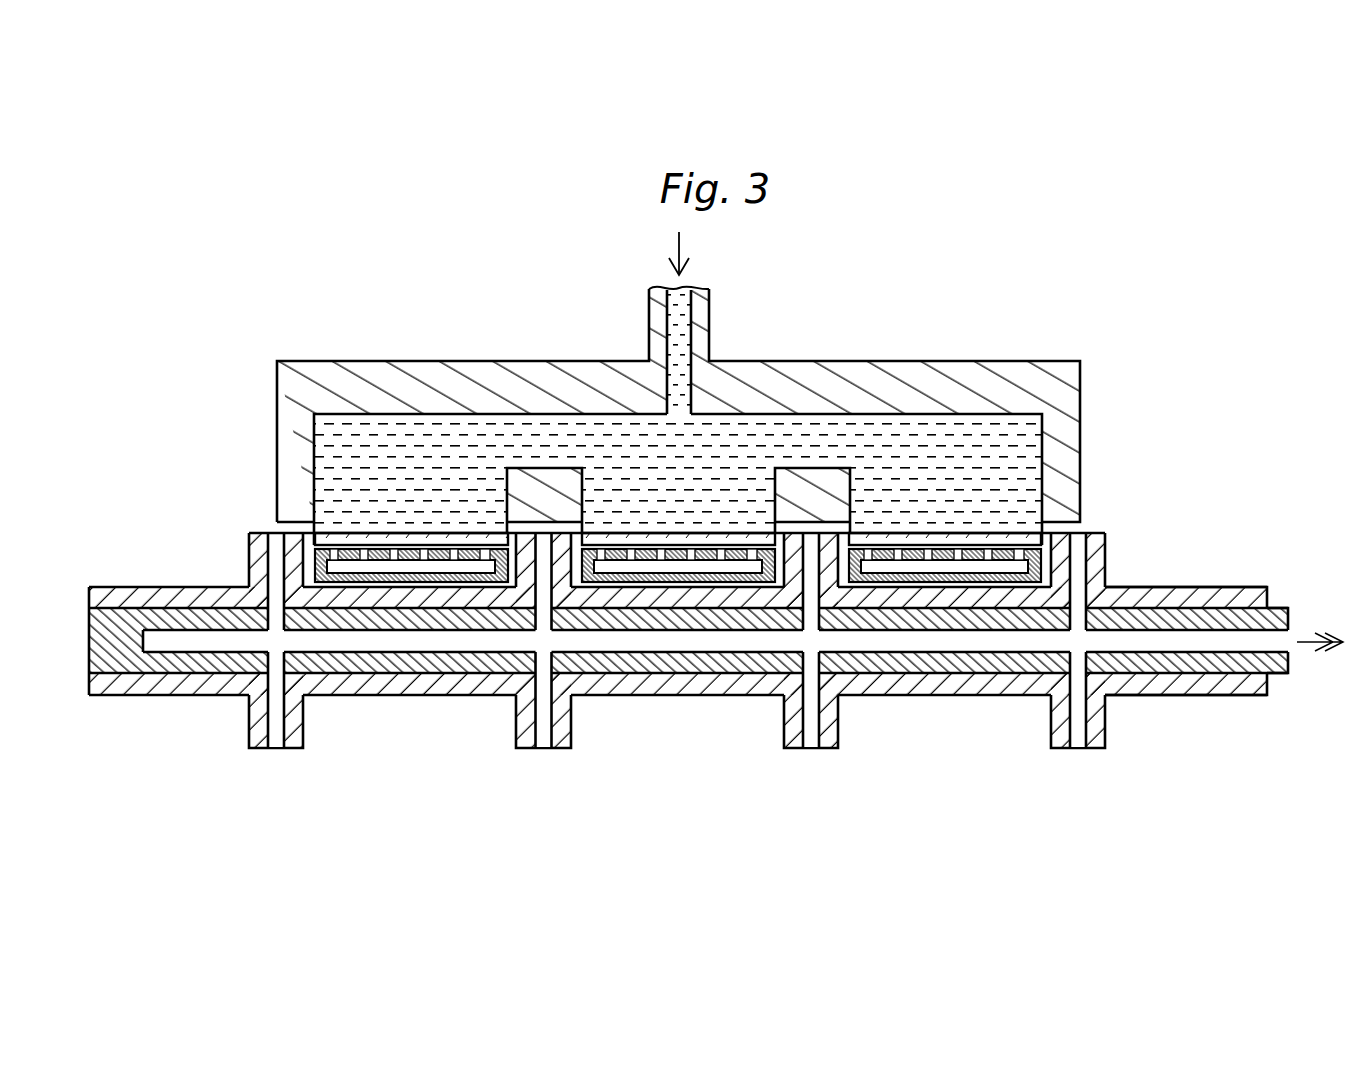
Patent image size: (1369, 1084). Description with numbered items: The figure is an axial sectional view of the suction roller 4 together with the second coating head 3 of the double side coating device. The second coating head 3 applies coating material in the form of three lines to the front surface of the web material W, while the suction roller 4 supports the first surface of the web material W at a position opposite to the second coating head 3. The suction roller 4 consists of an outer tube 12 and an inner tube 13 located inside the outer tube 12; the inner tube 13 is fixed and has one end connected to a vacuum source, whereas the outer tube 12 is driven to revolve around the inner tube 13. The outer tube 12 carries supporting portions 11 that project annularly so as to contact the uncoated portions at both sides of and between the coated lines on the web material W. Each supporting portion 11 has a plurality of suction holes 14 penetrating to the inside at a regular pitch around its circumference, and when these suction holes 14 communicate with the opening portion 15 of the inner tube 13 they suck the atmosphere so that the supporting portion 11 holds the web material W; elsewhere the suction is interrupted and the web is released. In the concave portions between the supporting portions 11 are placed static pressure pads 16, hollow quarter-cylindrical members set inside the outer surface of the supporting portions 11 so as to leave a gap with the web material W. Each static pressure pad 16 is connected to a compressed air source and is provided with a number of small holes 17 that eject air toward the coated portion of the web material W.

The second coating head 3 is at (826, 362).
The suction roller 4 is at (177, 561).
The supporting portion 11 is at (258, 754).
The outer tube 12 is at (1175, 588).
The inner tube 13 is at (1282, 609).
The suction hole 14 is at (272, 582).
The opening portion 15 is at (270, 623).
The static pressure pad 16 is at (390, 583).
The small hole 17 is at (457, 558).
The web material W is at (1089, 536).